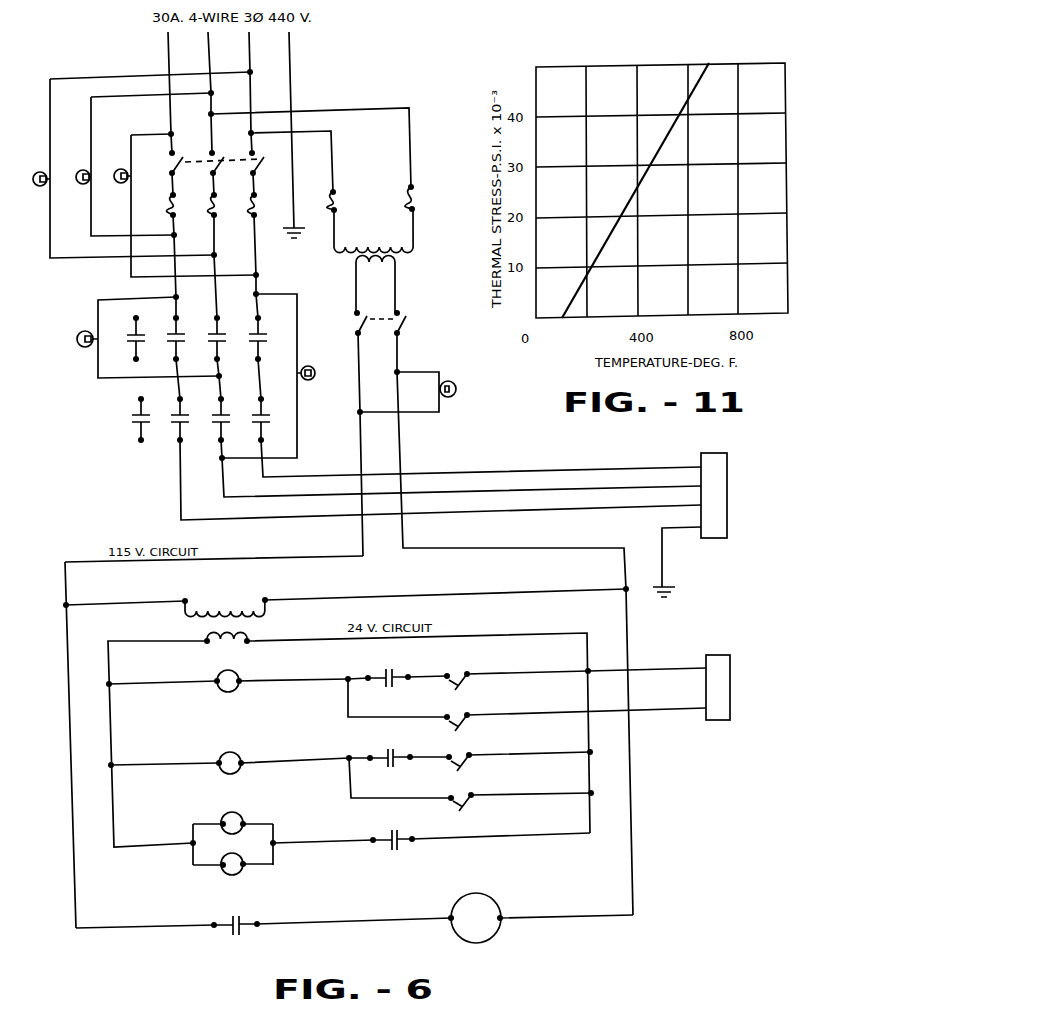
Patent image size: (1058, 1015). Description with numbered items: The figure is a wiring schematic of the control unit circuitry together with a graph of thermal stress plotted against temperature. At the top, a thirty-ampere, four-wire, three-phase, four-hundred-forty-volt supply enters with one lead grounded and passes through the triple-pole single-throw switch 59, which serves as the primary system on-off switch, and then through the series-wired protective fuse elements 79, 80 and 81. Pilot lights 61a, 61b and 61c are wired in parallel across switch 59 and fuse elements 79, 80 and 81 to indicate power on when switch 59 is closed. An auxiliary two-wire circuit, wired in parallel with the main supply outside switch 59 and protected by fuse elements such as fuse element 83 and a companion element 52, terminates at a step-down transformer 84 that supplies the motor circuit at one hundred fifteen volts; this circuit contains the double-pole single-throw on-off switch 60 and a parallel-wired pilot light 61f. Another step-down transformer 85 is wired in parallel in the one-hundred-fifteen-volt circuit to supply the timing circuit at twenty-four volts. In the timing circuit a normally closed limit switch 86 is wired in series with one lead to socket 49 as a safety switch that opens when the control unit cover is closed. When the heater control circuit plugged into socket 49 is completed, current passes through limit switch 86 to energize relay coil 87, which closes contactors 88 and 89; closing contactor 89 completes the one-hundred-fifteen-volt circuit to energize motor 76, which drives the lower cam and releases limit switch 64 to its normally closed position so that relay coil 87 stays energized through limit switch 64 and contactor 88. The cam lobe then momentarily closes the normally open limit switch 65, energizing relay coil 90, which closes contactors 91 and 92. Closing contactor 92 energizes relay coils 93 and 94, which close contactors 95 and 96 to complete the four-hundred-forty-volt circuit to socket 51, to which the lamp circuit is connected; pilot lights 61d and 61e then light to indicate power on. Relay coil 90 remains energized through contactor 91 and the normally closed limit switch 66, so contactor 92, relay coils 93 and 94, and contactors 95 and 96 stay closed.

The triple-pole single-throw switch 59 is at (262, 165).
The fuse element 79 is at (175, 208).
The fuse element 80 is at (216, 208).
The fuse element 81 is at (256, 208).
The fuse 52 is at (336, 205).
The fuse element 83 is at (414, 205).
The step-down transformer 84 is at (396, 256).
The double-pole single-throw switch 60 is at (405, 323).
The pilot light 61a is at (36, 186).
The pilot light 61b is at (79, 184).
The pilot light 61c is at (117, 183).
The pilot light 61d is at (80, 335).
The pilot light 61e is at (316, 371).
The pilot light 61f is at (457, 385).
The contactor 95 is at (190, 345).
The contactor 96 is at (191, 425).
The socket 51 is at (705, 539).
The step-down transformer 85 is at (253, 622).
The relay coil 87 is at (228, 692).
The relay coil 90 is at (230, 774).
The contactor 88 is at (389, 689).
The limit switch 64 is at (459, 686).
The normally closed limit switch 86 is at (459, 727).
The contactor 91 is at (391, 769).
The normally closed limit switch 66 is at (461, 767).
The normally open limit switch 65 is at (463, 807).
The socket 49 is at (709, 721).
The relay coil 93 is at (235, 834).
The relay coil 94 is at (236, 875).
The contactor 92 is at (393, 852).
The contactor 89 is at (236, 937).
The motor 76 is at (465, 930).